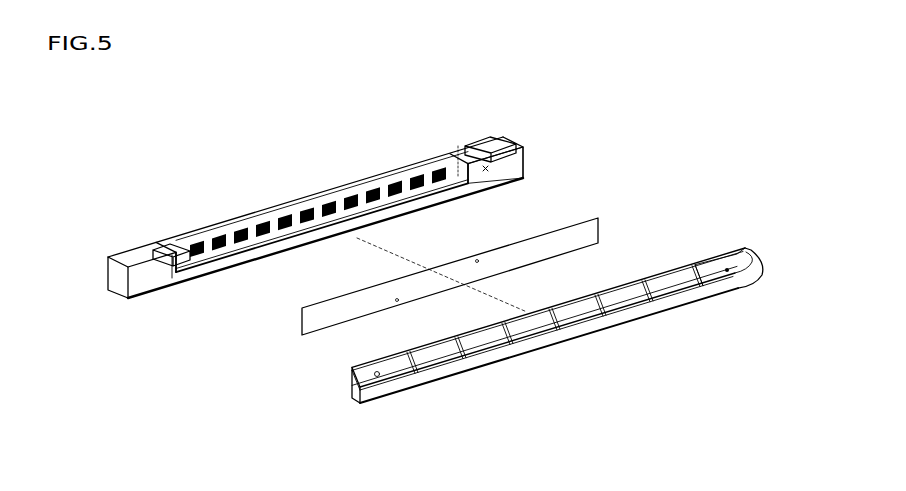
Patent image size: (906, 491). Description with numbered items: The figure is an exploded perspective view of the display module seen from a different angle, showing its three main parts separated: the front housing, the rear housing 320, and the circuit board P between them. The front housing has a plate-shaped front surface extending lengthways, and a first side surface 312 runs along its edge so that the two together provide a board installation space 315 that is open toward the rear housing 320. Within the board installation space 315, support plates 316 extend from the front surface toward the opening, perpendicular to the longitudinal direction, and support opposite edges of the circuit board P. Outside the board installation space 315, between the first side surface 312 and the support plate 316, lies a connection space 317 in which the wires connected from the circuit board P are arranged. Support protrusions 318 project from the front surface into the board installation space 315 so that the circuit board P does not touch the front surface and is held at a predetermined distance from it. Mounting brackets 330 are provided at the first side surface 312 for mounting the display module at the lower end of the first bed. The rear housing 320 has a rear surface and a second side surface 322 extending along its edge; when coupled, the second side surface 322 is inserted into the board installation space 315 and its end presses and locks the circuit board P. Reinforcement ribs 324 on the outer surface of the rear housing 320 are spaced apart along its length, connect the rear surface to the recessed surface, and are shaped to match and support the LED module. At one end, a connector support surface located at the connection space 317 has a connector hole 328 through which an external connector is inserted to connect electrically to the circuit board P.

The first side surface 312 is at (321, 219).
The board installation space 315 is at (362, 189).
The support plate 316 is at (180, 280).
The connection space 317 is at (515, 114).
The support protrusion 318 is at (416, 176).
The mounting bracket 330 is at (168, 248).
The rear housing 320 is at (565, 360).
The second side surface 322 is at (372, 407).
The reinforcement rib 324 is at (568, 328).
The connector hole 328 is at (737, 290).
The circuit board P is at (315, 338).